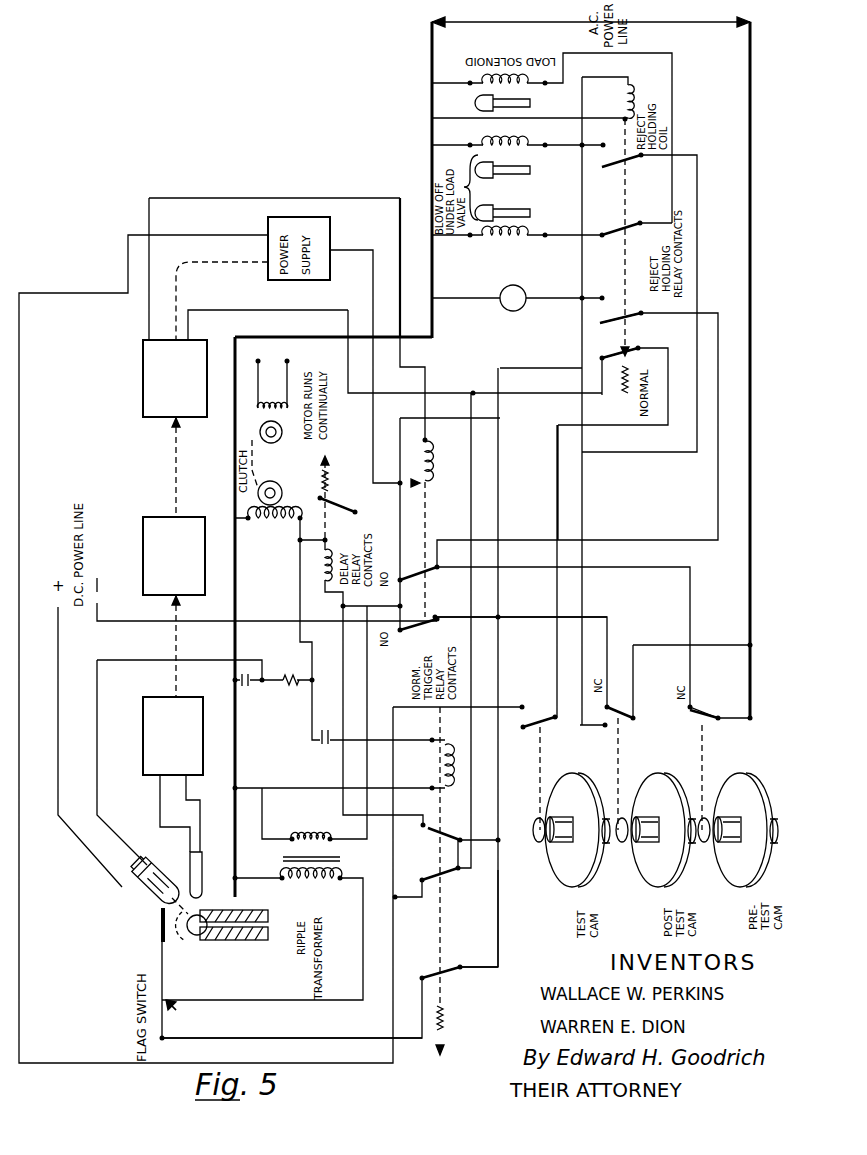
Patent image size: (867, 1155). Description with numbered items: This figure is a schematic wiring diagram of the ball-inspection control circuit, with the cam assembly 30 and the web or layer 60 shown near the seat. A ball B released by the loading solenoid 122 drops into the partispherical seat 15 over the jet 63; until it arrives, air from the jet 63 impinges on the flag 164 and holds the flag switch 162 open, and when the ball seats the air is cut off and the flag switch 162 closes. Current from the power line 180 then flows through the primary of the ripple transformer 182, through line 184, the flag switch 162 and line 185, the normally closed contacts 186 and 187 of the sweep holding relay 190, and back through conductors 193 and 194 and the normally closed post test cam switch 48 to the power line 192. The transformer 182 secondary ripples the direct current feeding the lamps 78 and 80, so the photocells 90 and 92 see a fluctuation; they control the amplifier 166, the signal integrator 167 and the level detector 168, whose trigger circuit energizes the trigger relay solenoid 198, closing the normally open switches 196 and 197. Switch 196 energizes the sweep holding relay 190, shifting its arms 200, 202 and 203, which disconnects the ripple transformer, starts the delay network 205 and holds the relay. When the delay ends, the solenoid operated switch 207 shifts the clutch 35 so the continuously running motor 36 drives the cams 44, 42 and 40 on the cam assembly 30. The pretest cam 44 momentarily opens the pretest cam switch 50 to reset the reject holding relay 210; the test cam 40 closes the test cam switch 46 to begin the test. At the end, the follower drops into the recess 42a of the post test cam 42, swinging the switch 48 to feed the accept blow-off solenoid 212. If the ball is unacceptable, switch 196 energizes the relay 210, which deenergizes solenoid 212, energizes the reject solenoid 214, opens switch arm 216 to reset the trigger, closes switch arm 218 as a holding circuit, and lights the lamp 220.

The seat 15 is at (202, 935).
The cam shaft 30 is at (555, 862).
The solenoid operated clutch 35 is at (282, 490).
The motor 36 is at (260, 405).
The test cam 40 is at (576, 840).
The post test cam 42 is at (662, 841).
The recess 42a is at (634, 855).
The pretest cam 44 is at (738, 878).
The test cam switch 46 is at (548, 718).
The post test cam switch 48 is at (616, 712).
The pretest cam switch 50 is at (705, 715).
The web layer 60 is at (278, 941).
The jet 63 is at (215, 937).
The lamp 78 is at (156, 857).
The lamp 80 is at (147, 866).
The photocell 90 is at (208, 871).
The photocell 92 is at (207, 900).
The loading solenoid 122 is at (530, 86).
The flag switch 162 is at (186, 1017).
The flag 164 is at (160, 938).
The amplifier 166 is at (128, 728).
The signal integrator 167 is at (143, 548).
The level detector 168 is at (143, 380).
The power line 180 is at (421, 33).
The ripple transformer 182 is at (338, 882).
The line 184 is at (245, 950).
The line 185 is at (372, 1038).
The normally closed contact 186 is at (429, 975).
The normally closed contact 187 is at (460, 968).
The sweep holding relay 190 is at (452, 758).
The power line 192 is at (750, 68).
The conductor 193 is at (498, 880).
The conductor 194 is at (533, 617).
The normally open switch 196 is at (400, 627).
The normally open switch 197 is at (425, 578).
The trigger relay solenoid 198 is at (431, 462).
The switch arm 200 is at (422, 978).
The switch arm 202 is at (422, 879).
The switch arm 203 is at (426, 826).
The delay network 205 is at (291, 695).
The solenoid operated switch 207 is at (350, 507).
The reject holding relay 210 is at (622, 90).
The accept blow-off solenoid 212 is at (495, 238).
The reject solenoid 214 is at (530, 150).
The switch arm 216 is at (590, 340).
The switch arm 218 is at (603, 318).
The lamp 220 is at (513, 312).
The ball B is at (190, 935).